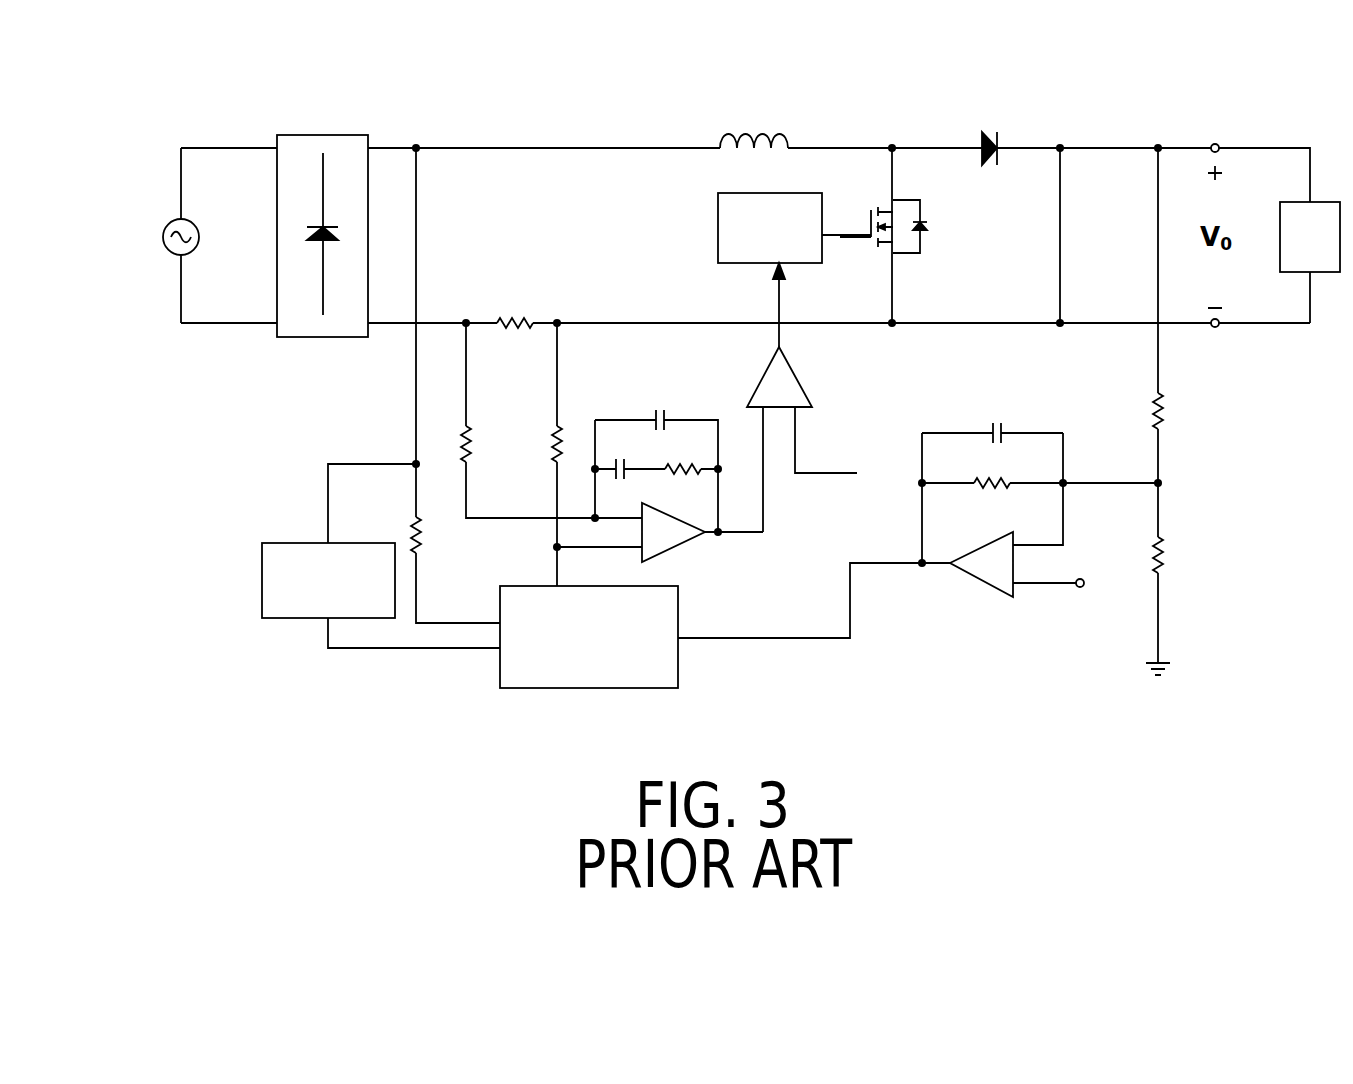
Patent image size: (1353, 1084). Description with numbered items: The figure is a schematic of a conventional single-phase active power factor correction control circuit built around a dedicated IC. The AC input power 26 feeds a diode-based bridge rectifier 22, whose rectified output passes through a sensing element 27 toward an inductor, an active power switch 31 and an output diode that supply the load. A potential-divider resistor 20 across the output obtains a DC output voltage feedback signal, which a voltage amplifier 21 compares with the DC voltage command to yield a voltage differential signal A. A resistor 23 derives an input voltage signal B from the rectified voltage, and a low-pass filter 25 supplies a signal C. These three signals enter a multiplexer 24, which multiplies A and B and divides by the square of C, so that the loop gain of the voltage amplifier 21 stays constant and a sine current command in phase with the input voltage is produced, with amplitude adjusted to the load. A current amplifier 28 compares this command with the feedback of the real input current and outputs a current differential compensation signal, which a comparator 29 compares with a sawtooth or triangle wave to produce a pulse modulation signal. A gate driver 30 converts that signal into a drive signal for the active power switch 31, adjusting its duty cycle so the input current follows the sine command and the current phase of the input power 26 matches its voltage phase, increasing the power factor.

The potential-divider resistor 20 is at (1165, 560).
The voltage amplifier 21 is at (982, 585).
The diode-based bridge rectifier 22 is at (323, 340).
The resistor 23 is at (417, 537).
The multiplexer 24 is at (678, 670).
The low-pass filter 25 is at (262, 578).
The input power 26 is at (163, 235).
The current sensing resistor 27 is at (513, 320).
The current amplifier 28 is at (675, 548).
The comparator 29 is at (797, 375).
The gate driver 30 is at (718, 235).
The active power switch 31 is at (920, 242).